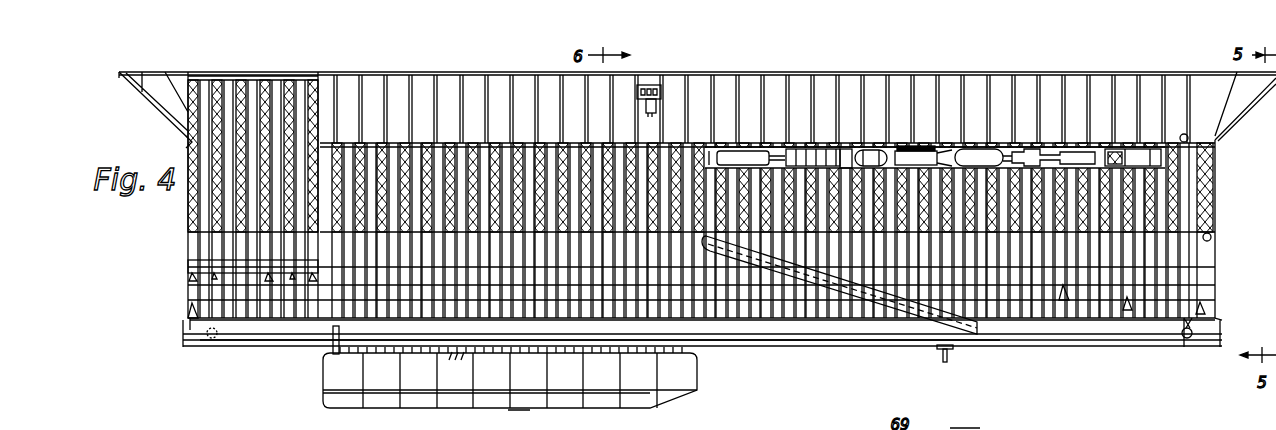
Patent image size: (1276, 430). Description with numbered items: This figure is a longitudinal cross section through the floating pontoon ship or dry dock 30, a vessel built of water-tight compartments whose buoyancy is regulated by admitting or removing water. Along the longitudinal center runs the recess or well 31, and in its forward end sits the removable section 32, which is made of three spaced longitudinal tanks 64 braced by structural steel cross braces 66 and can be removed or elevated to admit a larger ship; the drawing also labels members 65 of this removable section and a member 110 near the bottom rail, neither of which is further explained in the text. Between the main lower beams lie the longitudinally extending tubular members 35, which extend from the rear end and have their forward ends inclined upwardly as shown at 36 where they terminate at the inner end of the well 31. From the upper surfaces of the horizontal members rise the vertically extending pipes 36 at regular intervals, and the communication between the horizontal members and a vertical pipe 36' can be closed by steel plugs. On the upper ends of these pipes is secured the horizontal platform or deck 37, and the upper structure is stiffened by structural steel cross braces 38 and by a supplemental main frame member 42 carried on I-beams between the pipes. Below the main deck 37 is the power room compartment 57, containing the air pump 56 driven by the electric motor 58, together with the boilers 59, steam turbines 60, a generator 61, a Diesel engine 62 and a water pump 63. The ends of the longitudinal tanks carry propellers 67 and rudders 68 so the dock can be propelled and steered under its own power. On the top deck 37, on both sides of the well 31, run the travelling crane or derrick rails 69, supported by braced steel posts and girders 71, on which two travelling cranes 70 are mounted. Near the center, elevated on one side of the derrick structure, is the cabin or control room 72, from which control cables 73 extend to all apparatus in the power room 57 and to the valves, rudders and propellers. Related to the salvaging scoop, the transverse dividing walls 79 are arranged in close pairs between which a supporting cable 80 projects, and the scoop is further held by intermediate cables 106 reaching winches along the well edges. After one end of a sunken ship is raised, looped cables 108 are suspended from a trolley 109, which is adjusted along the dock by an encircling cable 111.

The pontoon ship or dry dock 30 is at (1218, 178).
The recess or well 31 is at (406, 145).
The removable section 32 is at (188, 192).
The longitudinally extending tubular members 35 is at (1133, 325).
The vertically extending pipes 36 is at (839, 305).
The vertical pipe 36' is at (720, 287).
The horizontal platform or deck 37 is at (1216, 141).
The structural steel cross braces 38 is at (1208, 205).
The supplemental main frame member 42 is at (1210, 234).
The air pump 56 is at (912, 152).
The power room compartment 57 is at (845, 150).
The electric motor 58 is at (872, 152).
The boilers 59 is at (1136, 152).
The steam turbines 60 is at (1050, 153).
The generator 61 is at (976, 152).
The Diesel engine 62 is at (798, 152).
The water pump 63 is at (731, 152).
The longitudinally extending tanks 64 is at (240, 266).
The uprights 65 is at (276, 78).
The structural steel cross braces 66 is at (190, 150).
The propellers 67 is at (1063, 290).
The rudders 68 is at (195, 310).
The travelling crane or derrick rails 69 is at (506, 73).
The travelling cranes 70 is at (514, 412).
The steel posts and girders 71 is at (586, 111).
The cabin or control room 72 is at (650, 85).
The control cables 73 is at (645, 110).
The transverse dividing walls 79 is at (466, 396).
The supporting cable 80 is at (580, 352).
The intermediate cables 106 is at (455, 366).
The looped cables 108 is at (948, 353).
The trolley 109 is at (938, 350).
The post 110 is at (306, 336).
The encircling cable 111 is at (262, 340).